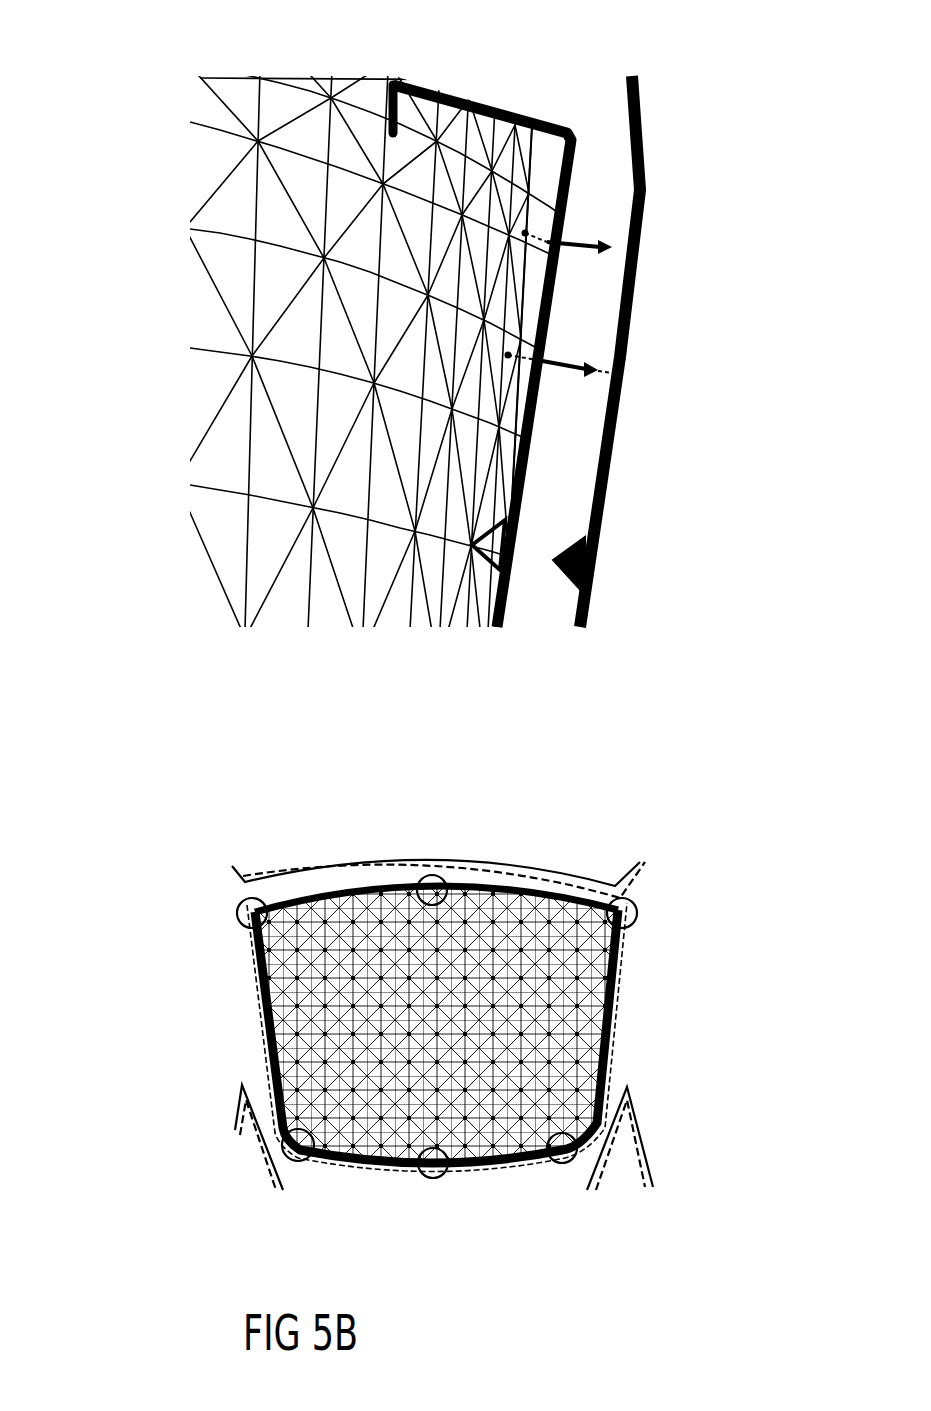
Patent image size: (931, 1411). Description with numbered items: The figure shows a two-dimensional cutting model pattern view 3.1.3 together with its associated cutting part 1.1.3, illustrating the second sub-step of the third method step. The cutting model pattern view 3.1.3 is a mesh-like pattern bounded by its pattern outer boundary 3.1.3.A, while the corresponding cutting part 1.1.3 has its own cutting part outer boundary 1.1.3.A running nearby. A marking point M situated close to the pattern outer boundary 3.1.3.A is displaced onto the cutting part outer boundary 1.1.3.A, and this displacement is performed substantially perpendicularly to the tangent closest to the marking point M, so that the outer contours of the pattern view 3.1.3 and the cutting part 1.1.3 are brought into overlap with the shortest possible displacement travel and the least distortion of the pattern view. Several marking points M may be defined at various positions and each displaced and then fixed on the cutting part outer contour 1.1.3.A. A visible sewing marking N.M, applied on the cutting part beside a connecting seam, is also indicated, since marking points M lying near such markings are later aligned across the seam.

The cutting part 1.1.3 is at (578, 100).
The cutting part outer boundary 1.1.3.A is at (568, 148).
The cutting model pattern view 3.1.3 is at (213, 522).
The pattern outer boundary 3.1.3.A is at (500, 458).
The marking point M is at (555, 265).
The visible sewing marking N.M is at (590, 565).